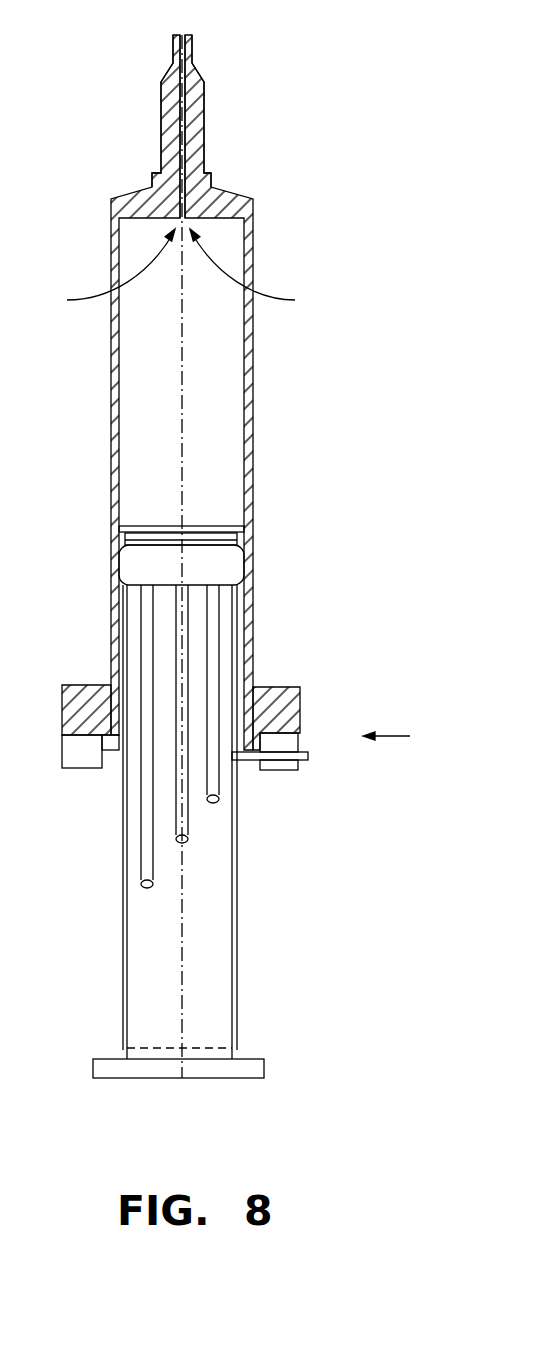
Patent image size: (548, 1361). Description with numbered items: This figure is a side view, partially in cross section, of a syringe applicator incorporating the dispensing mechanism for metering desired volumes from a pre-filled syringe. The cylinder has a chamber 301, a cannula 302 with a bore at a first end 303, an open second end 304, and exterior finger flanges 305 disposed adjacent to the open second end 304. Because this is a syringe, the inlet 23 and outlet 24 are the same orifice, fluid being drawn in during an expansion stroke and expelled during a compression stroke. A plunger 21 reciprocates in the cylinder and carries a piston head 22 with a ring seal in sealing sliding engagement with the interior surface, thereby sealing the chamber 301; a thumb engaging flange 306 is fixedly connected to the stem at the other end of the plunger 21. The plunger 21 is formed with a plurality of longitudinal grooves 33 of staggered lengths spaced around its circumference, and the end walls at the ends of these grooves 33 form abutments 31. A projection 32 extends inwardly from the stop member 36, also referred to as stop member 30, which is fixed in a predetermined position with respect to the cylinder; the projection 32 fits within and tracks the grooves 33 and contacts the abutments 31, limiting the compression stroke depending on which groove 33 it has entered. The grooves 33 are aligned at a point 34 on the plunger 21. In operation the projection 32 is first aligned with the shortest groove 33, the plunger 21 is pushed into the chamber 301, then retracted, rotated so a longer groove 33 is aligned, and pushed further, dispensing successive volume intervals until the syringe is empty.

The chamber 301 is at (230, 362).
The cannula 302 is at (204, 117).
The first end 303 is at (175, 127).
The inlet 23 is at (255, 271).
The outlet 24 is at (107, 270).
The piston head 22 is at (205, 522).
The plunger 21 is at (123, 862).
The longitudinal grooves 33 is at (147, 628).
The abutments 31 is at (147, 888).
The finger flanges 305 is at (62, 703).
The stop member 36 is at (300, 695).
The open second end 304 is at (122, 752).
The projection 32 is at (308, 757).
The stop member 30 is at (298, 770).
The point 34 is at (404, 737).
The thumb engaging flange 306 is at (132, 1070).